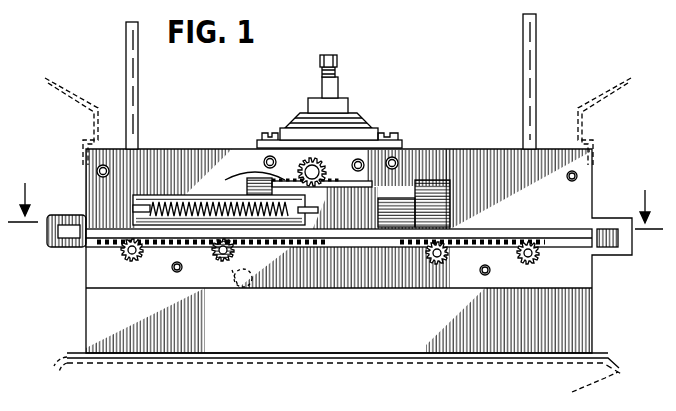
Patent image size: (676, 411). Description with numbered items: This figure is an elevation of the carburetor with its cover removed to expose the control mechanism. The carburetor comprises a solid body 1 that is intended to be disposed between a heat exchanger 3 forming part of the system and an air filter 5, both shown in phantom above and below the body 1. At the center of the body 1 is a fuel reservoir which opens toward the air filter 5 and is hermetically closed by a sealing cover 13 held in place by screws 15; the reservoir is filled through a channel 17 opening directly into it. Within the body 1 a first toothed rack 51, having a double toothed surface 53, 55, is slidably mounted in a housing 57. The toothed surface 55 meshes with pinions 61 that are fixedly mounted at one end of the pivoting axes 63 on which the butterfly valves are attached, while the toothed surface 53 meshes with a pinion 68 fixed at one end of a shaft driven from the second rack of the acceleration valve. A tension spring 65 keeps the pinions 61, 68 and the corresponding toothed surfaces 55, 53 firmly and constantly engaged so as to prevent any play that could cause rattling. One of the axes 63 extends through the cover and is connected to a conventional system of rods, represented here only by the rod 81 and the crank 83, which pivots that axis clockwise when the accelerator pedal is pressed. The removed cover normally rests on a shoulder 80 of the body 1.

The solid body 1 is at (593, 185).
The heat exchanger 3 is at (335, 294).
The air filter 5 is at (592, 100).
The sealing cover 13 is at (352, 133).
The screws 15 is at (272, 132).
The channel 17 is at (385, 133).
The toothed rack 51 is at (410, 196).
The toothed surface 53 is at (246, 180).
The toothed surface 55 is at (113, 230).
The housing 57 is at (447, 210).
The pinions 61 is at (125, 258).
The pivoting axes 63 is at (120, 257).
The tension spring 65 is at (175, 200).
The pinion 68 is at (322, 165).
The shoulder 80 is at (338, 287).
The rod 81 is at (252, 286).
The crank 83 is at (240, 290).